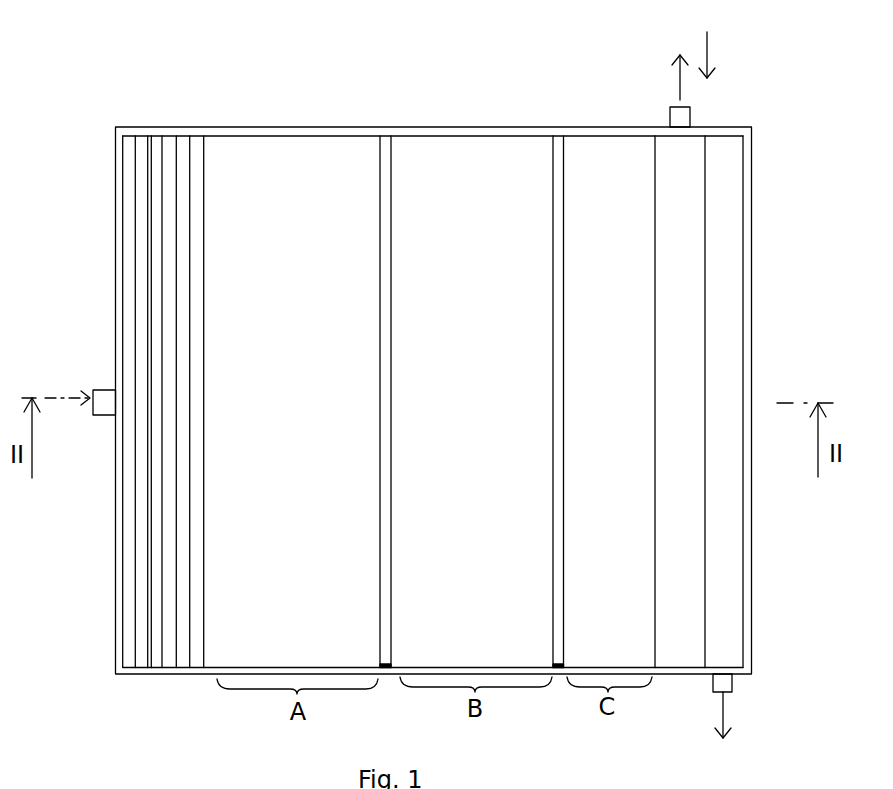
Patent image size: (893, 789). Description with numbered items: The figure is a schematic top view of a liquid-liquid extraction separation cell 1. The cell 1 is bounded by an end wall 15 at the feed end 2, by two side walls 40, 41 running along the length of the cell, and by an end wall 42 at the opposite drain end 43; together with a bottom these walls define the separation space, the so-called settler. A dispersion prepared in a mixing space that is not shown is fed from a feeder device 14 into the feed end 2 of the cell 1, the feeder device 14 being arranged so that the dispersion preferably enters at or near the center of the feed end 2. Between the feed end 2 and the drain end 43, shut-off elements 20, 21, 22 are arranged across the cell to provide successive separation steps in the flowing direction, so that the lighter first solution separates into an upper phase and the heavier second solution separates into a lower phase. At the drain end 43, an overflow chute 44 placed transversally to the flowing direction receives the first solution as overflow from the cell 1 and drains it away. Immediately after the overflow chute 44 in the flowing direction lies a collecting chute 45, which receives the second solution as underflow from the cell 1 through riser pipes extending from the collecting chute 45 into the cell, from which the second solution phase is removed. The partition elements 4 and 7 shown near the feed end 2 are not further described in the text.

The cell 1 is at (302, 193).
The feed end 2 is at (135, 113).
The partition plate 4 is at (145, 140).
The partition plate 7 is at (170, 138).
The feeder device 14 is at (97, 390).
The end wall 15 is at (124, 604).
The shut-off element 20 is at (202, 142).
The shut-off element 21 is at (385, 152).
The shut-off element 22 is at (557, 152).
The side wall 40 is at (252, 136).
The side wall 41 is at (267, 667).
The end wall 42 is at (743, 299).
The drain end 43 is at (696, 66).
The overflow chute 44 is at (665, 398).
The collecting chute 45 is at (742, 398).